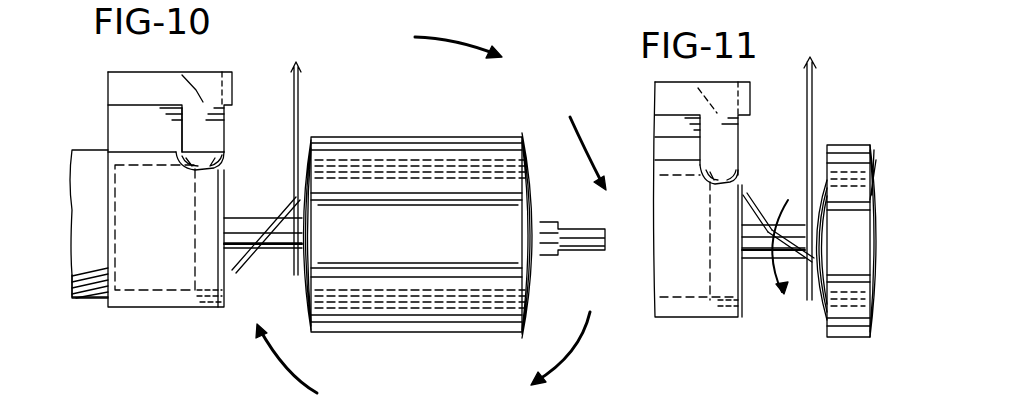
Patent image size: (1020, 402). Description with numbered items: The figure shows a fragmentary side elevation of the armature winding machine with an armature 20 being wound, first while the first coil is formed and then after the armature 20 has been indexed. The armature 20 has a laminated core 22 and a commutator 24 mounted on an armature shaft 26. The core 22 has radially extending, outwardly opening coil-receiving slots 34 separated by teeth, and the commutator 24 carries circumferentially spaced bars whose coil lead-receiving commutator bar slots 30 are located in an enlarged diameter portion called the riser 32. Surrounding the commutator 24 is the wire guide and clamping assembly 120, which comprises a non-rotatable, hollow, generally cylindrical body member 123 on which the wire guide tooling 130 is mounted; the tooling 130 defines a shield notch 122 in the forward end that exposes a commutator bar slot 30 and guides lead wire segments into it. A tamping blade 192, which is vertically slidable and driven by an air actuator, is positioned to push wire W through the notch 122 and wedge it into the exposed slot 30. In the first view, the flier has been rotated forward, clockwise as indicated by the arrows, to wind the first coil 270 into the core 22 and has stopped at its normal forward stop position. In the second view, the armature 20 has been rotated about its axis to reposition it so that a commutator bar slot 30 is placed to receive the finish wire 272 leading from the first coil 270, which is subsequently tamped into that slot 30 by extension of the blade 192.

In FIG. 10, the armature 20 is at (403, 136).
In FIG. 10, the laminated core 22 is at (455, 167).
In FIG. 10, the commutator 24 is at (157, 292).
In FIG. 11, the commutator 24 is at (678, 296).
In FIG. 10, the armature shaft 26 is at (247, 218).
In FIG. 11, the armature shaft 26 is at (755, 235).
In FIG. 10, the commutator bar slot 30 is at (215, 160).
In FIG. 11, the commutator bar slot 30 is at (730, 170).
In FIG. 10, the riser 32 is at (203, 308).
In FIG. 11, the riser 32 is at (708, 306).
In FIG. 10, the coil-receiving slot 34 is at (452, 270).
In FIG. 10, the wire guide and clamping assembly 120 is at (97, 303).
In FIG. 10, the shield notch 122 is at (217, 125).
In FIG. 11, the shield notch 122 is at (662, 136).
In FIG. 10, the hollow body member 123 is at (75, 168).
In FIG. 10, the wire guide tooling 130 is at (98, 113).
In FIG. 11, the wire guide tooling 130 is at (646, 106).
In FIG. 10, the tamping blade 192 is at (205, 80).
In FIG. 10, the first coil 270 is at (535, 180).
In FIG. 11, the first coil 270 is at (812, 288).
In FIG. 11, the finish wire 272 is at (817, 86).
In FIG. 10, the wire W is at (304, 82).